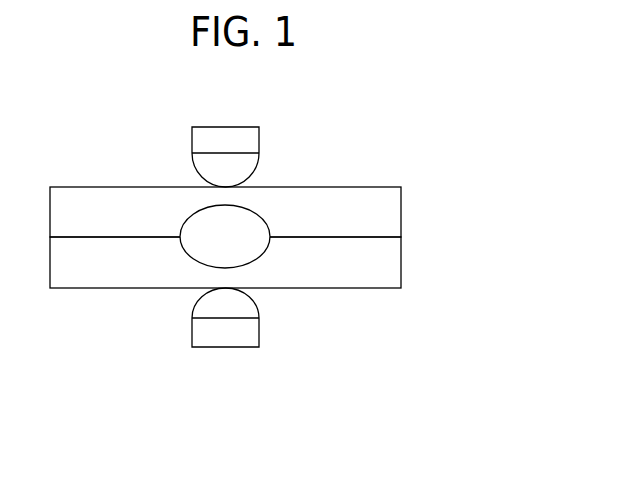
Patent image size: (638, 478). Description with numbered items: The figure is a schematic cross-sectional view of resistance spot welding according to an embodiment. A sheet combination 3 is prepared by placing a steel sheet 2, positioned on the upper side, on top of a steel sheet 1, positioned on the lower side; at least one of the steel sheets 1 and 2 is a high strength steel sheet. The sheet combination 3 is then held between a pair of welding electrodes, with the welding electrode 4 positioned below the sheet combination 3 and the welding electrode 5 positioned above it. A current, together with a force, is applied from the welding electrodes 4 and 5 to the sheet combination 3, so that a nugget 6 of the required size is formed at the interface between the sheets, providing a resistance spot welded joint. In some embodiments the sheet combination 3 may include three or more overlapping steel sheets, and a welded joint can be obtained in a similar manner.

The steel sheet 1 is at (402, 260).
The steel sheet 2 is at (402, 213).
The sheet combination 3 is at (292, 238).
The welding electrode 4 is at (260, 333).
The welding electrode 5 is at (190, 143).
The nugget 6 is at (253, 245).